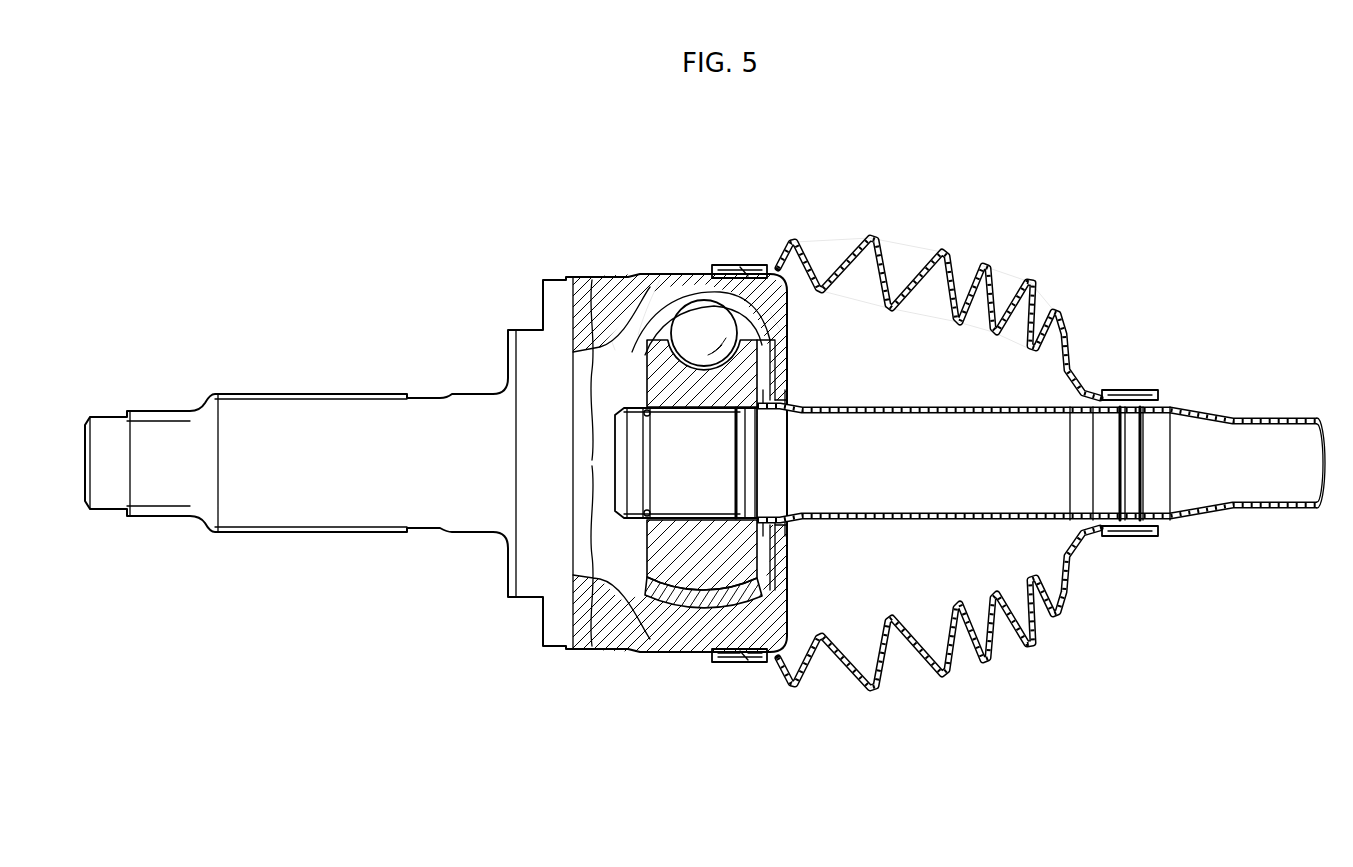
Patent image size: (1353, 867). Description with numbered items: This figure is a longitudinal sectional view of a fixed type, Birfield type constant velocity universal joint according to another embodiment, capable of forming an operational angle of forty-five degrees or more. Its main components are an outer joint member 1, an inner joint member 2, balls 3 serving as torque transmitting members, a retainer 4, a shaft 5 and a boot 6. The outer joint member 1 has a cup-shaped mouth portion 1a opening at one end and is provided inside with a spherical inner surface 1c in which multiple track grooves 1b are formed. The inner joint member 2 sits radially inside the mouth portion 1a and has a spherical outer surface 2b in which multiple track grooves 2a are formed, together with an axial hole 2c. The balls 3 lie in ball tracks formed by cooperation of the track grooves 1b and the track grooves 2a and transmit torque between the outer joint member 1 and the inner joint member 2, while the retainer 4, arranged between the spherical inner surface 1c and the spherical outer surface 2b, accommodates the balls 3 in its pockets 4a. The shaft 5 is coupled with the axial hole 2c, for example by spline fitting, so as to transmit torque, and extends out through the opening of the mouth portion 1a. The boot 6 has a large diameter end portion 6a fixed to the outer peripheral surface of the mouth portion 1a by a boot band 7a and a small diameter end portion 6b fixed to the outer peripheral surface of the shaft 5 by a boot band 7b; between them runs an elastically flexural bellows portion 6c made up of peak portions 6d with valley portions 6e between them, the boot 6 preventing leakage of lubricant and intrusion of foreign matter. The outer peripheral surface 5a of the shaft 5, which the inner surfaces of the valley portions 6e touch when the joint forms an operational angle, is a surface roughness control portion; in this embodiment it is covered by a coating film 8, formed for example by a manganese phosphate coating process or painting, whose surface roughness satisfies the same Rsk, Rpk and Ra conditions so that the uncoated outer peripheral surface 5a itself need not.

The outer joint member 1 is at (550, 310).
The mouth portion 1a is at (628, 277).
The track grooves 1b is at (770, 312).
The spherical inner surface 1c is at (638, 335).
The inner joint member 2 is at (765, 551).
The track grooves 2a is at (772, 362).
The spherical outer surface 2b is at (612, 342).
The axial hole 2c is at (677, 518).
The ball 3 is at (700, 292).
The retainer 4 is at (681, 611).
The pockets 4a is at (690, 300).
The shaft 5 is at (1200, 519).
The outer peripheral surface 5a is at (966, 520).
The boot 6 is at (950, 262).
The large diameter end portion 6a is at (742, 266).
The small diameter end portion 6b is at (1125, 395).
The bellows portion 6c is at (935, 680).
The peak portions 6d is at (942, 252).
The valley portions 6e is at (1032, 350).
The boot band 7a is at (740, 664).
The boot band 7b is at (1130, 538).
The coating film 8 is at (886, 520).